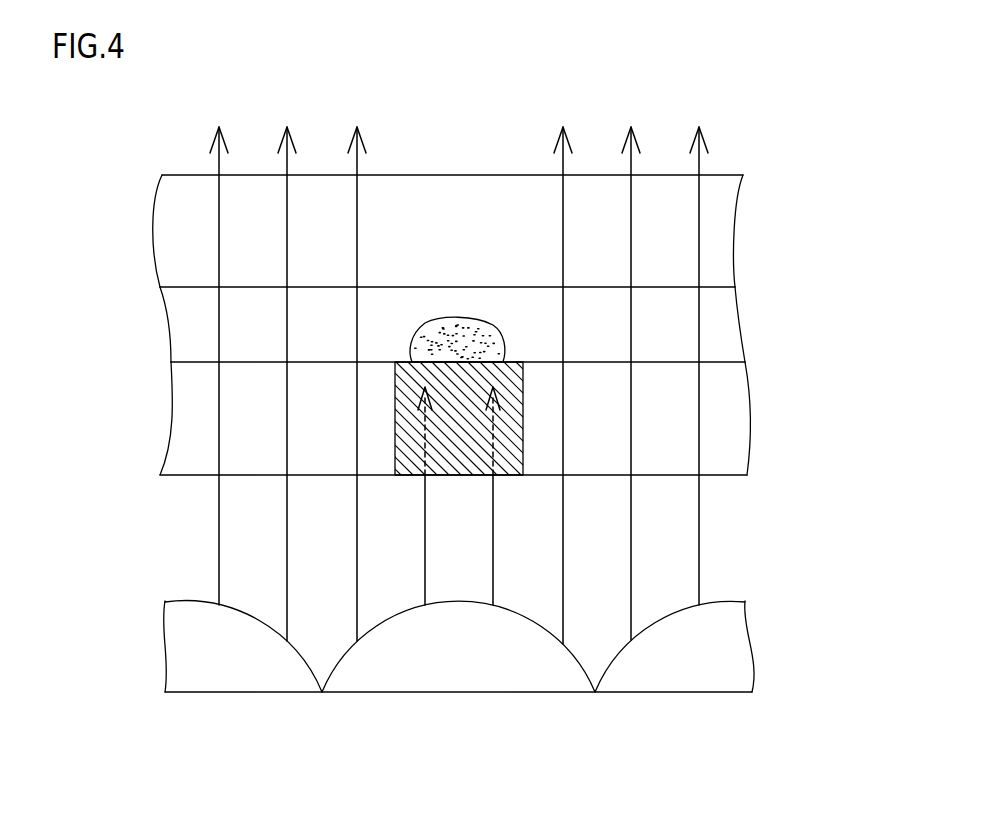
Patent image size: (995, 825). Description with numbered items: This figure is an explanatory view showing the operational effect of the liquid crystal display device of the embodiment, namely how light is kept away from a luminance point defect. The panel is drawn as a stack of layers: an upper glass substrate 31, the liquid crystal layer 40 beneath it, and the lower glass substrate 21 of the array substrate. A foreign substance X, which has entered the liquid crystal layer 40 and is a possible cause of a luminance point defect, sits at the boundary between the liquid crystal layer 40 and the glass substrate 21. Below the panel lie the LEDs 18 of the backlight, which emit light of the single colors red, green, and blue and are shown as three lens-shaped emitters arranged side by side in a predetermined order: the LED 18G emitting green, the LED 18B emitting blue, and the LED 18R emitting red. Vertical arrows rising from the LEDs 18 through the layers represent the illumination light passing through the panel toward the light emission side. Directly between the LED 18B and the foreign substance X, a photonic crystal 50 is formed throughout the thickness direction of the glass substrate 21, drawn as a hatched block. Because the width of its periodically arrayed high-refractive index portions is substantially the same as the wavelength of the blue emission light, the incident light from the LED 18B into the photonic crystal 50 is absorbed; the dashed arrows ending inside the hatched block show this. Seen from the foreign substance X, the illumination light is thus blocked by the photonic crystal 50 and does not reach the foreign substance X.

The glass substrate 31 is at (720, 242).
The liquid crystal layer 40 is at (728, 340).
The glass substrate 21 is at (738, 418).
The photonic crystal 50 is at (512, 372).
The foreign substance X is at (448, 333).
The LEDs 18 is at (515, 689).
The LED emitting G (green) 18G is at (245, 668).
The LED emitting B (blue) 18B is at (460, 673).
The LED emitting R (red) 18R is at (708, 680).